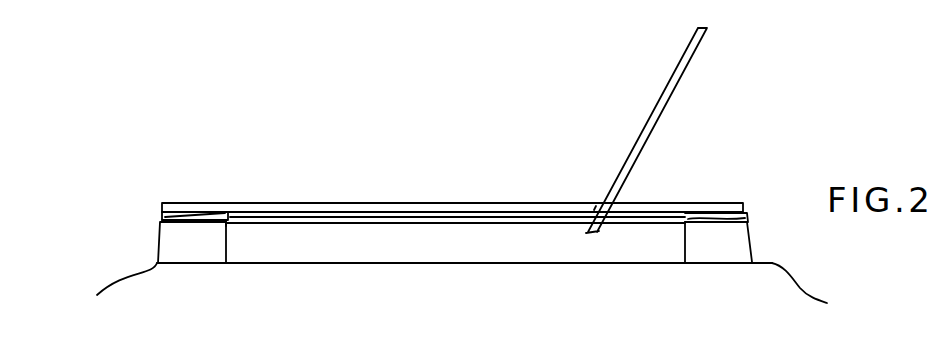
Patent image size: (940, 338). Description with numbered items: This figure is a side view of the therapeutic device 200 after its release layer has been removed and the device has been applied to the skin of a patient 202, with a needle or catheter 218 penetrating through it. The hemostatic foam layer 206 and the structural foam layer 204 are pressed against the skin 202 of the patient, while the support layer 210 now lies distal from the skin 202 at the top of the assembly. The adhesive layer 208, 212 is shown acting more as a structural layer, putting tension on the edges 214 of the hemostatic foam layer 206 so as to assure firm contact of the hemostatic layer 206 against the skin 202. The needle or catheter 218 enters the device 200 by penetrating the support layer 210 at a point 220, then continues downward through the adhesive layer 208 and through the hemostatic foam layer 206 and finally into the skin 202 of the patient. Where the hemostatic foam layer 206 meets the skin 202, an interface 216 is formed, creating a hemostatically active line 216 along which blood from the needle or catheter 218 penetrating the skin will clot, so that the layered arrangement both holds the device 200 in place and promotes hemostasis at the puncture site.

The therapeutic device 200 is at (800, 142).
The skin of a patient 202 is at (757, 290).
The structural foam layer 204 is at (158, 243).
The hemostatic foam layer 206 is at (557, 250).
The adhesive layer 208 is at (744, 216).
The support layer 210 is at (425, 203).
The adhesive layer 212 is at (160, 218).
The edges of the hemostatic foam layer 214 is at (230, 223).
The interface 216 is at (411, 265).
The needle or catheter 218 is at (688, 62).
The point 220 is at (598, 193).